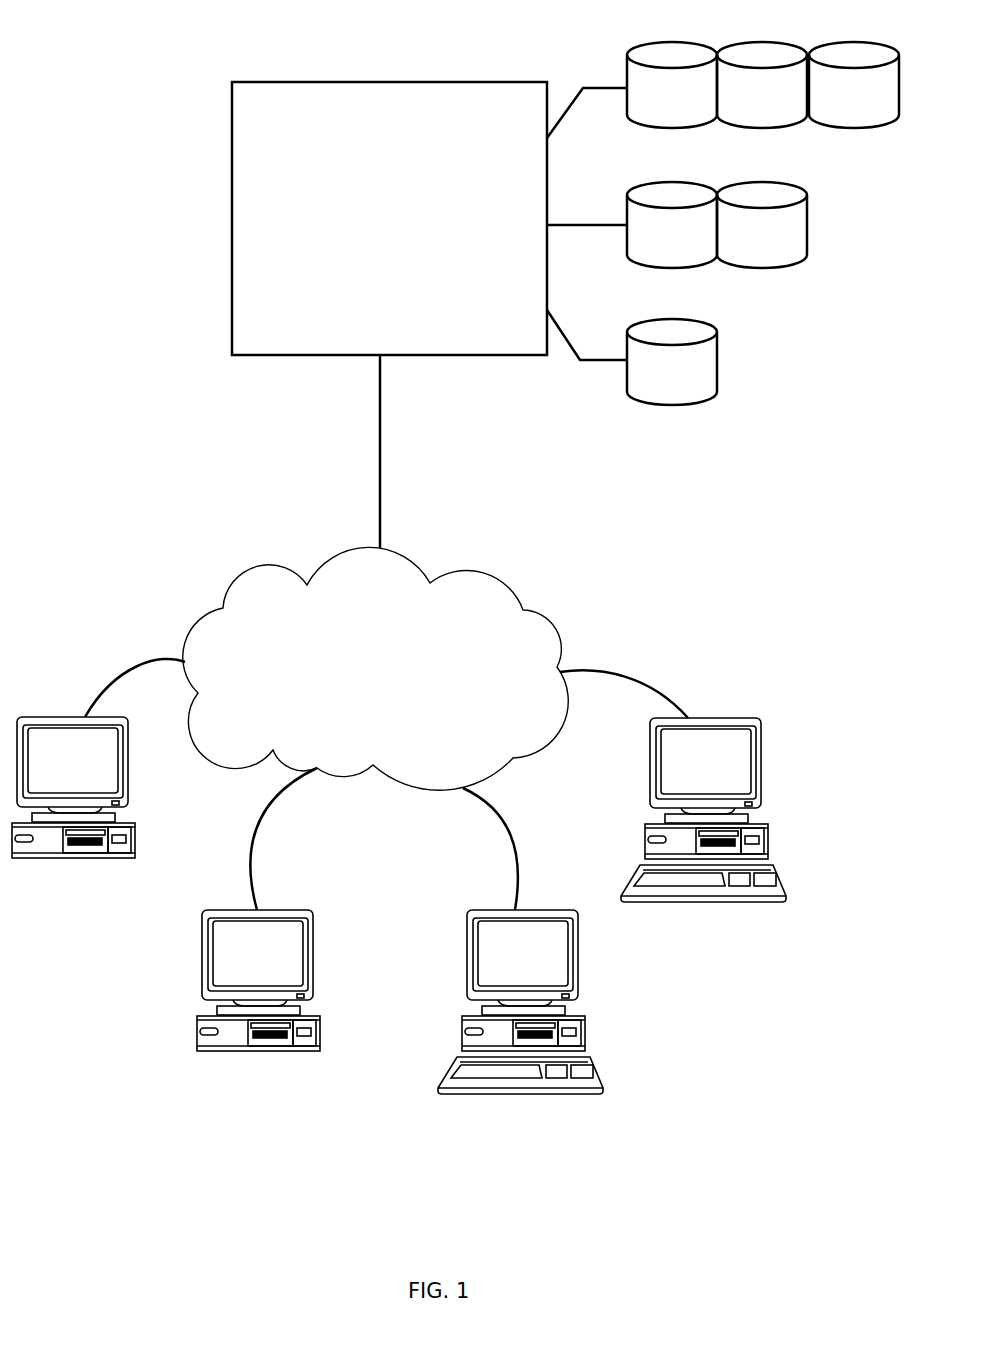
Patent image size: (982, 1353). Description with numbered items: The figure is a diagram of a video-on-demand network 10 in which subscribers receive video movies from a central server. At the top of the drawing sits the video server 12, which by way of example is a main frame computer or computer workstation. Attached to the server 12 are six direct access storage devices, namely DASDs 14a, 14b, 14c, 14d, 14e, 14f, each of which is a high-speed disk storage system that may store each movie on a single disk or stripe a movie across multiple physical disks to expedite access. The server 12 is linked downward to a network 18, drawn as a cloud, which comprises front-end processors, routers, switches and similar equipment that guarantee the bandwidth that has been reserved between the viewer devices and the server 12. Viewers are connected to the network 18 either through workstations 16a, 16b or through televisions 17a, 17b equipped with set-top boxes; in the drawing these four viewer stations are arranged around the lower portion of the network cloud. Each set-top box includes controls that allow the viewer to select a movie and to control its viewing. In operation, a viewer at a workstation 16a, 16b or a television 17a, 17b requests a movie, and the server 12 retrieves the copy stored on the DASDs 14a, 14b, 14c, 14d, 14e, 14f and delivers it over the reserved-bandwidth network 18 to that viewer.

The video-on-demand network 10 is at (112, 63).
The video server 12 is at (388, 82).
The DASD 14a is at (668, 42).
The DASD 14b is at (757, 42).
The DASD 14c is at (850, 42).
The DASD 14d is at (668, 182).
The DASD 14e is at (757, 182).
The DASD 14f is at (667, 318).
The workstation 16a is at (538, 910).
The workstation 16b is at (732, 718).
The television 17a is at (283, 910).
The television 17b is at (25, 717).
The network 18 is at (470, 580).